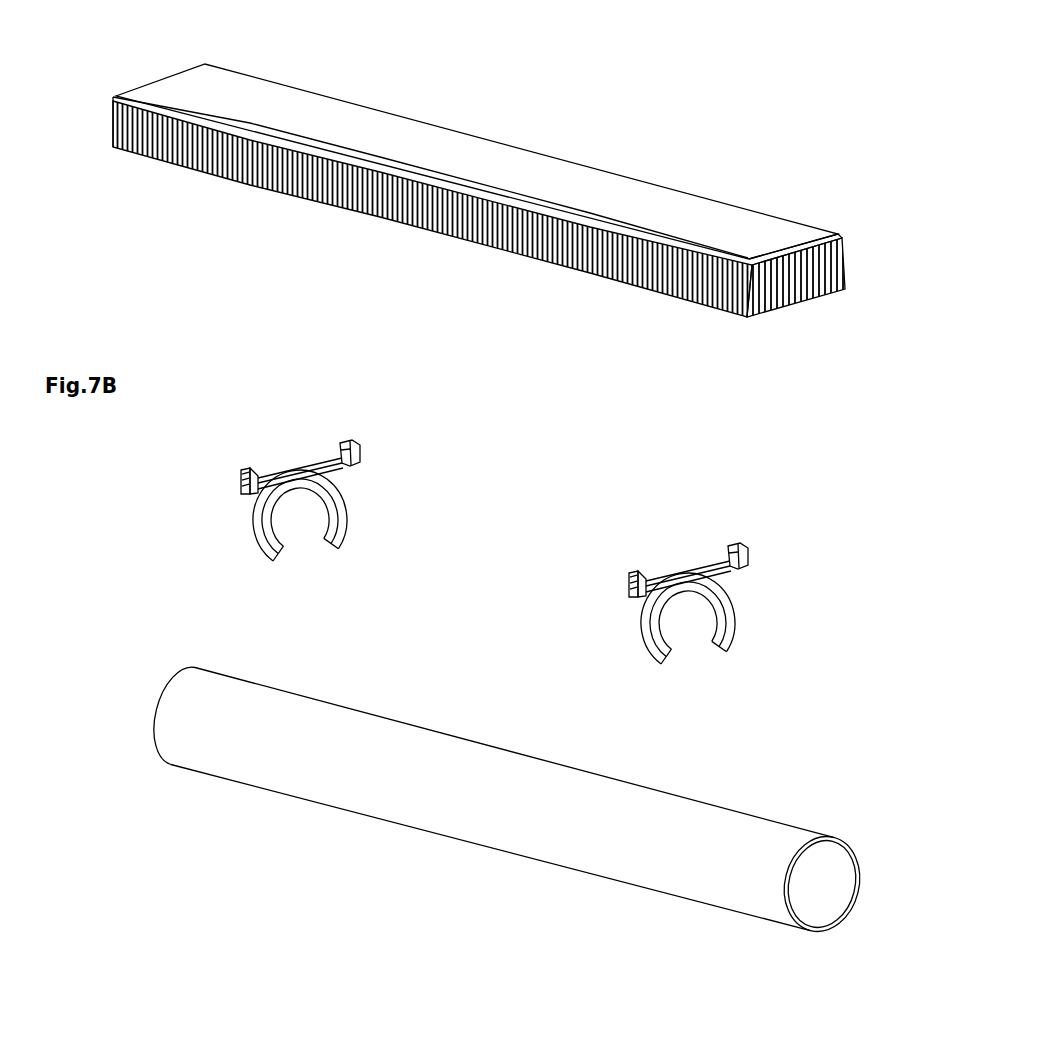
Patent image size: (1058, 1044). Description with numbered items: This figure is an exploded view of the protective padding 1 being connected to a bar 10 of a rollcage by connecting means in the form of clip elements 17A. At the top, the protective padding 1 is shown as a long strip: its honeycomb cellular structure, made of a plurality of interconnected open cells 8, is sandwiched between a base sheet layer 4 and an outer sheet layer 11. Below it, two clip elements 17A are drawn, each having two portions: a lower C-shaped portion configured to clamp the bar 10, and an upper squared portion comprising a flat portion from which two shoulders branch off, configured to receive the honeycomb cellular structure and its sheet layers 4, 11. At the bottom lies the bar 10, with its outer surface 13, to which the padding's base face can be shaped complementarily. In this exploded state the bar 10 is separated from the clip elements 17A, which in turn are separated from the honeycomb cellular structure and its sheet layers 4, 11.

The protective padding 1 is at (441, 158).
The base sheet layer 4 is at (226, 183).
The open cells 8 is at (113, 121).
The outer sheet layer 11 is at (263, 105).
The bar 10 is at (461, 803).
The outer surface 13 is at (522, 808).
The clip elements 17A is at (457, 527).